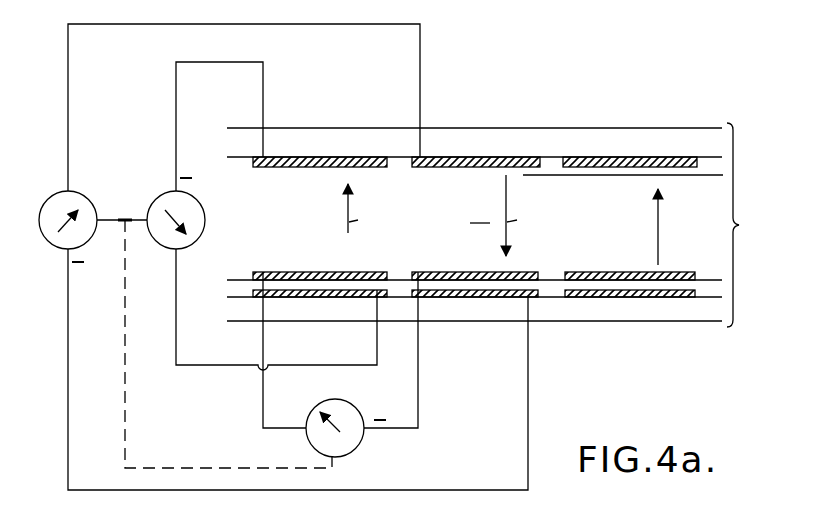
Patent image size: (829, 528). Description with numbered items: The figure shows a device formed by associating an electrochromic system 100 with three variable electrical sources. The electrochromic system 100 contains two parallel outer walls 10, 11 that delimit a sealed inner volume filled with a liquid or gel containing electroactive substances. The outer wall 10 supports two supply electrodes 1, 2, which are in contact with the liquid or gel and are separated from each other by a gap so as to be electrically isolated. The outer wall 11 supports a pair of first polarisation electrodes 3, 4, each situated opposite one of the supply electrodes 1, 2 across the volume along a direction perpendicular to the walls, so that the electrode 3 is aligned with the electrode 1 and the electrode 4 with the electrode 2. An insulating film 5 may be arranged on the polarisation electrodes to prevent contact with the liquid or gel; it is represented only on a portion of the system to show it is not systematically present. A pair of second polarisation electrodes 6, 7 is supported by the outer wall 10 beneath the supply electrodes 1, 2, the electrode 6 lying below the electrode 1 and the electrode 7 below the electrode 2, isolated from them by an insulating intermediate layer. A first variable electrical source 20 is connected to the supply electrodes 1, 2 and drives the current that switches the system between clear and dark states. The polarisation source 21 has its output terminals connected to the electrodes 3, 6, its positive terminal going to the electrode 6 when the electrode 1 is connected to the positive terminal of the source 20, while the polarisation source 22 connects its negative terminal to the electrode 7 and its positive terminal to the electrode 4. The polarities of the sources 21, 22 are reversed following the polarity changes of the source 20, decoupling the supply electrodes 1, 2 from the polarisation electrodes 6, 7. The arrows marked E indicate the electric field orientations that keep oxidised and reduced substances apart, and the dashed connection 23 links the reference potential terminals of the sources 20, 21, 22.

The supply electrode 1 is at (286, 274).
The supply electrode 2 is at (447, 274).
The first polarisation electrode 3 is at (345, 157).
The first polarisation electrode 4 is at (498, 157).
The insulating film 5 is at (710, 158).
The second polarisation electrode 6 is at (362, 292).
The second polarisation electrode 7 is at (508, 297).
The outer wall 10 is at (705, 310).
The outer wall 11 is at (690, 142).
The first variable electrical source 20 is at (357, 450).
The polarisation source 21 is at (155, 195).
The polarisation source 22 is at (55, 195).
The additional connection 23 is at (126, 393).
The electrochromic system 100 is at (506, 218).